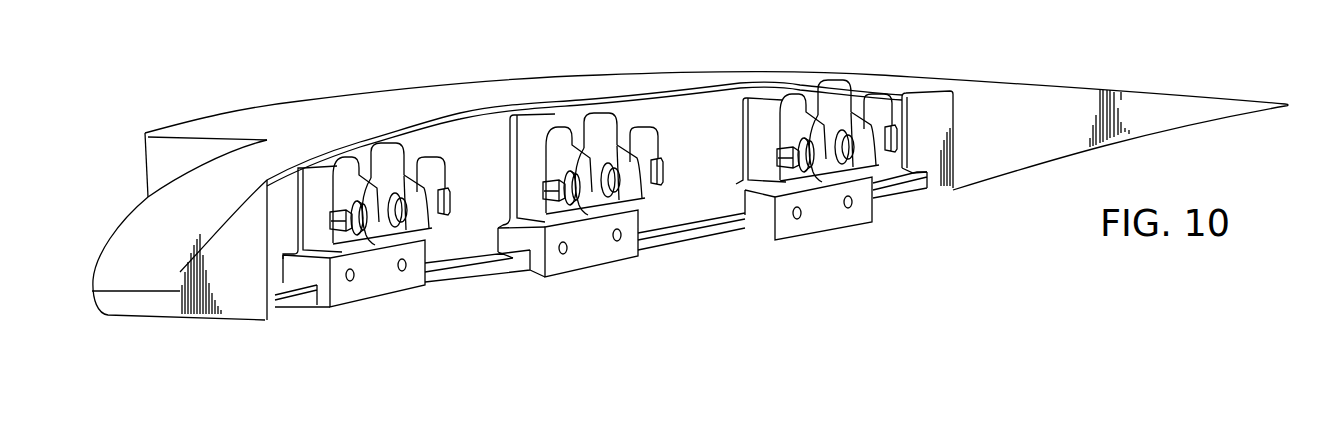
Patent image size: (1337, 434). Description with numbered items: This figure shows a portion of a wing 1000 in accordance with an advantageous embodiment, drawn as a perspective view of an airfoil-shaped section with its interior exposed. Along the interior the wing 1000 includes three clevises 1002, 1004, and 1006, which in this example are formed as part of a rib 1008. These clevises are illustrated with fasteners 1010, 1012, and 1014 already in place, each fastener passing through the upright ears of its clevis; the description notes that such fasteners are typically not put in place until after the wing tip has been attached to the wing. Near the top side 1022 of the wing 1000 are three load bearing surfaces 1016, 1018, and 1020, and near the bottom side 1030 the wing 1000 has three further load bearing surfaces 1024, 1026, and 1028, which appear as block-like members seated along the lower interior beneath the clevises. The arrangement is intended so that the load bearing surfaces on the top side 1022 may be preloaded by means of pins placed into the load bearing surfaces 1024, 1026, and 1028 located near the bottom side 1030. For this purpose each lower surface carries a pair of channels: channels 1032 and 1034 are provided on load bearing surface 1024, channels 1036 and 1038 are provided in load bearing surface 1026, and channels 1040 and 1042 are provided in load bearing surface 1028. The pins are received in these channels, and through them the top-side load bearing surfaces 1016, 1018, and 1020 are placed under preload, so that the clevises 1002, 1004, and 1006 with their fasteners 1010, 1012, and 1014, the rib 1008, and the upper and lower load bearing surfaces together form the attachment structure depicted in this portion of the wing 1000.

The wing 1000 is at (228, 112).
The clevis 1002 is at (457, 228).
The clevis 1004 is at (698, 191).
The clevis 1006 is at (883, 117).
The rib 1008 is at (1035, 148).
The fastener 1010 is at (337, 197).
The fastener 1012 is at (542, 185).
The fastener 1014 is at (783, 150).
The load bearing surface 1016 is at (410, 135).
The load bearing surface 1018 is at (577, 110).
The load bearing surface 1020 is at (803, 92).
The top side 1022 is at (340, 105).
The load bearing surface 1024 is at (366, 317).
The load bearing surface 1026 is at (580, 286).
The load bearing surface 1028 is at (814, 252).
The bottom side 1030 is at (684, 244).
The channel 1032 is at (353, 282).
The channel 1034 is at (404, 272).
The channel 1036 is at (566, 255).
The channel 1038 is at (620, 242).
The channel 1040 is at (800, 219).
The channel 1042 is at (851, 208).